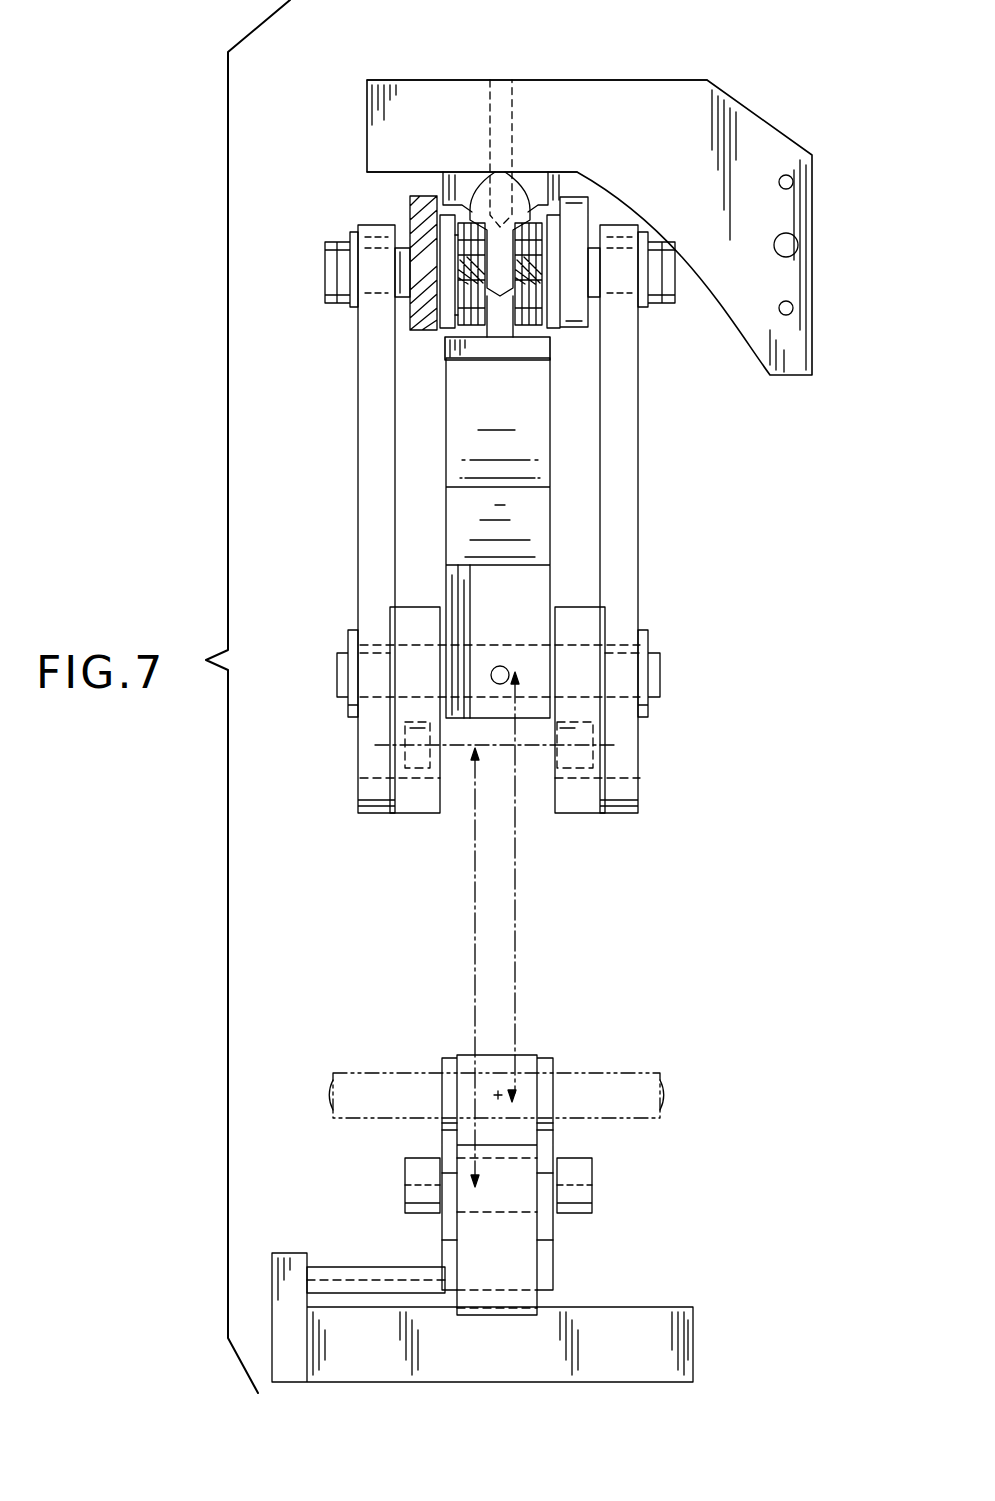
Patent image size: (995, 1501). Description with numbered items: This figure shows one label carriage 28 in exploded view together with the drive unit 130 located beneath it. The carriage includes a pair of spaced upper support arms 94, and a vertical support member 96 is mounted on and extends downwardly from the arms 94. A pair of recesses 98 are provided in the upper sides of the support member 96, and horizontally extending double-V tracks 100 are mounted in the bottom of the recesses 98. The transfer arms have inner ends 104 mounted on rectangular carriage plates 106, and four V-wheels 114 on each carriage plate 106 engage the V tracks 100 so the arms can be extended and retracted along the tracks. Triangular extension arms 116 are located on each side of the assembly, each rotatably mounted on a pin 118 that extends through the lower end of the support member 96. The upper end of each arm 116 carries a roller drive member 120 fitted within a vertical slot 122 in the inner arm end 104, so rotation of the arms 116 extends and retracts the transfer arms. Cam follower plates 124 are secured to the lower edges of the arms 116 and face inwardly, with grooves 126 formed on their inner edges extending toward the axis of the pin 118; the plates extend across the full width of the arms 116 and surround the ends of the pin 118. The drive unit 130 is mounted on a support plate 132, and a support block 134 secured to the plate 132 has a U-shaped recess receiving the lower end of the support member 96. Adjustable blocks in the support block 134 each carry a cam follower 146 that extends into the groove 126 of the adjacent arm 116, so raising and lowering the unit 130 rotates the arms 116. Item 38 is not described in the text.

The label carriage 28 is at (726, 50).
The upper support arm 94 is at (413, 88).
The recess 98 is at (472, 197).
The V-wheel 114 is at (458, 215).
The inner arm end 104 is at (412, 250).
The vertical slot 122 is at (412, 248).
The roller drive member 120 is at (427, 262).
The carriage plate 106 is at (548, 215).
The double-V track 100 is at (500, 337).
The vertical support member 96 is at (448, 423).
The extension arm 116 is at (372, 490).
The cam follower plate 124 is at (410, 607).
The pin 118 is at (474, 655).
The pin 38 is at (467, 718).
The groove 126 is at (425, 757).
The drive unit 130 is at (740, 1193).
The support plate 132 is at (660, 1343).
The support block 134 is at (525, 1268).
The cam follower 146 is at (408, 1193).